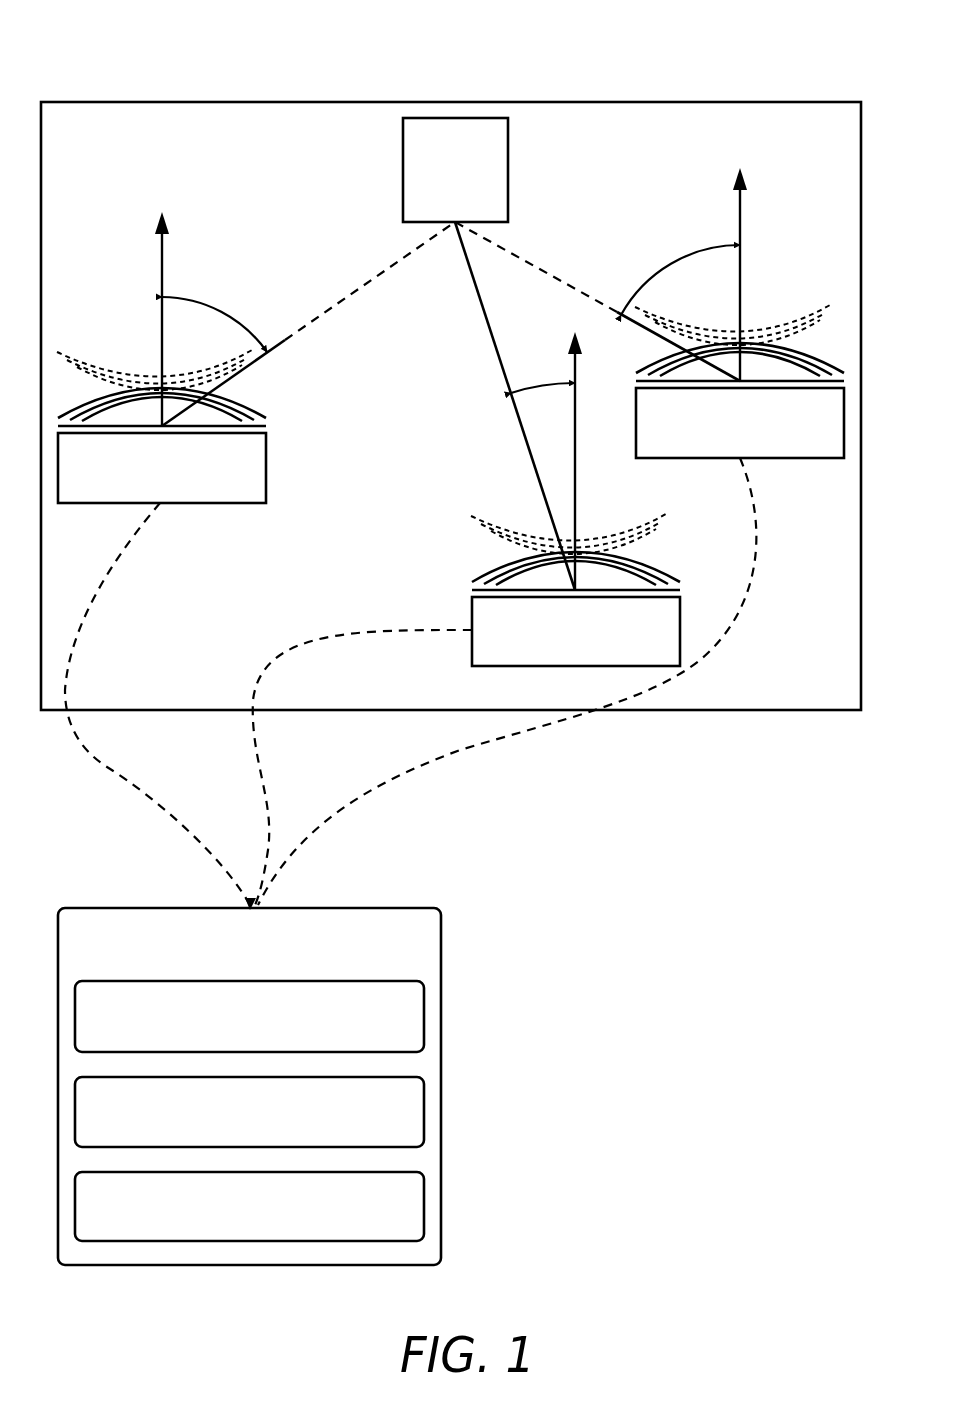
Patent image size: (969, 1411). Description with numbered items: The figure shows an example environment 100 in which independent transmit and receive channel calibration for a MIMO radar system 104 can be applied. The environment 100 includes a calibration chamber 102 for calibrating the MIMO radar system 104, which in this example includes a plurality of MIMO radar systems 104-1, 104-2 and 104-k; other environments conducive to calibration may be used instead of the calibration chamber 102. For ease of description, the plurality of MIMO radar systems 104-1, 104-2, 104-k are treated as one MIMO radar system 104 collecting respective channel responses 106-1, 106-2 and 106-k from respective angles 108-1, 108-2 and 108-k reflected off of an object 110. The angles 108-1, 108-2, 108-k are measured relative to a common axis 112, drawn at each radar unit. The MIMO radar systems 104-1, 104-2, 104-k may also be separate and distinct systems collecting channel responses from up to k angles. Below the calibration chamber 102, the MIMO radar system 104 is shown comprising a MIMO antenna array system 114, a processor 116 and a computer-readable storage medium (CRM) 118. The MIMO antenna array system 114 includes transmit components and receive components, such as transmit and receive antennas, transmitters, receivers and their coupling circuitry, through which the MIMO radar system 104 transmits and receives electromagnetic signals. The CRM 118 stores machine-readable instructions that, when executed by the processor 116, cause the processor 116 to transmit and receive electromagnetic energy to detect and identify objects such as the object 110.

The environment 100 is at (122, 30).
The calibration chamber 102 is at (682, 712).
The MIMO radar system 104 is at (249, 1086).
The MIMO radar system 104-1 is at (575, 590).
The MIMO radar system 104-2 is at (161, 426).
The MIMO radar system 104-k is at (739, 381).
The channel response 106-1 is at (538, 476).
The channel response 106-2 is at (308, 325).
The channel response 106-k is at (523, 262).
The angle 108-1 is at (214, 316).
The angle 108-2 is at (543, 370).
The angle 108-k is at (680, 280).
The object 110 is at (455, 170).
The common axis 112 is at (162, 272).
The MIMO antenna array system 114 is at (249, 1016).
The processor 116 is at (249, 1112).
The computer-readable storage medium (CRM) 118 is at (249, 1206).